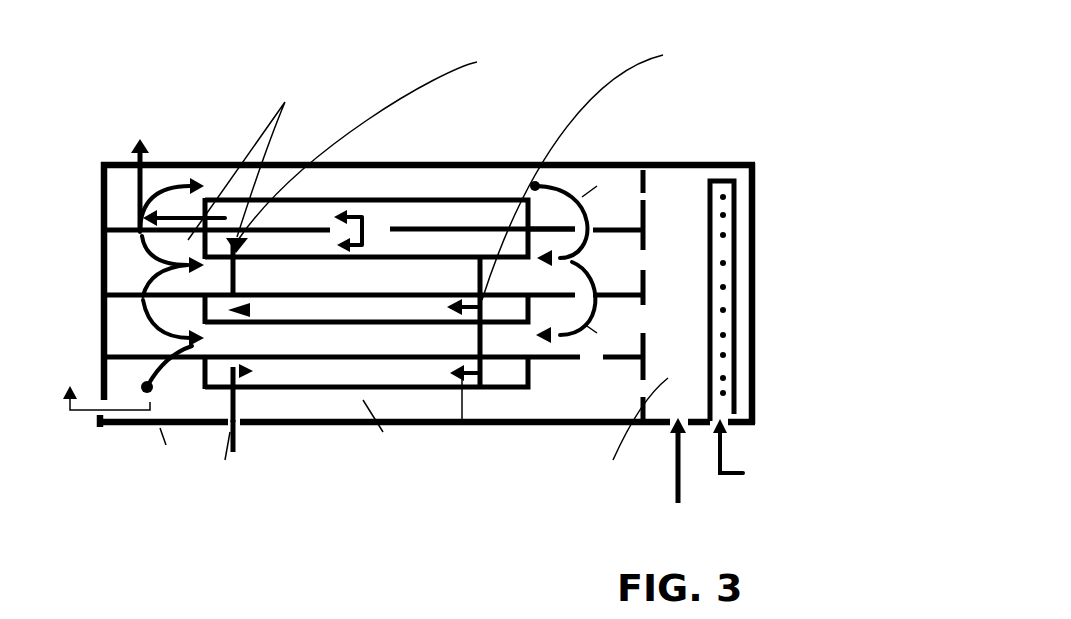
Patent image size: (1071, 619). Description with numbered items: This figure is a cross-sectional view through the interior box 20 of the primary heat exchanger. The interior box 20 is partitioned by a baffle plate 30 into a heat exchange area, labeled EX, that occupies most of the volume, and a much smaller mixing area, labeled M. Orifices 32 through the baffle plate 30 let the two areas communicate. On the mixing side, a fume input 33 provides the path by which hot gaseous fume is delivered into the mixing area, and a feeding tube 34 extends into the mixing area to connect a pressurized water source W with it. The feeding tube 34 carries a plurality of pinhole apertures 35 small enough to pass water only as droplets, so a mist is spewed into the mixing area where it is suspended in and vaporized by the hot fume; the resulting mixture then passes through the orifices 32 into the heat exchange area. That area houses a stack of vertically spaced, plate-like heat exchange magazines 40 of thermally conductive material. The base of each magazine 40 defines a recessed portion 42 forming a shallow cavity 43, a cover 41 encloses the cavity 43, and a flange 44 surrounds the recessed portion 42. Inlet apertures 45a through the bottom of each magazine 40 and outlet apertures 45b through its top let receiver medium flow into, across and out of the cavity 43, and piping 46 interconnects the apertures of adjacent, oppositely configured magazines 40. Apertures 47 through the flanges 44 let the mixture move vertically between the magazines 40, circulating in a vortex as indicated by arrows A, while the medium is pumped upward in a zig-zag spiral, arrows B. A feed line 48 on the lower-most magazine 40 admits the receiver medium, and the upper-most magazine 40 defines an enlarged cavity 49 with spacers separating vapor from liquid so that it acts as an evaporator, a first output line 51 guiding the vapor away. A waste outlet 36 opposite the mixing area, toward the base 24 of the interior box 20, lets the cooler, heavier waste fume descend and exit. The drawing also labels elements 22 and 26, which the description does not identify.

The interior box 20 is at (647, 137).
The housing 22 is at (599, 163).
The base 24 is at (476, 425).
The housing wall 26 is at (98, 176).
The baffle plate 30 is at (650, 215).
The orifices 32 is at (645, 198).
The fume input 33 is at (693, 432).
The feeding tube 34 is at (708, 228).
The pinhole apertures 35 is at (710, 350).
The waste outlet 36 is at (118, 430).
The heat exchange magazine 40 is at (484, 178).
The cover 41 is at (357, 293).
The recessed portion 42 is at (203, 306).
The cavity 43 is at (335, 330).
The flange 44 is at (122, 236).
The inlet apertures 45a is at (237, 397).
The outlet apertures 45b is at (238, 284).
The piping 46 is at (486, 337).
The apertures 47 is at (590, 237).
The feed line 48 is at (240, 438).
The enlarged cavity 49 is at (403, 215).
The first output line 51 is at (147, 163).